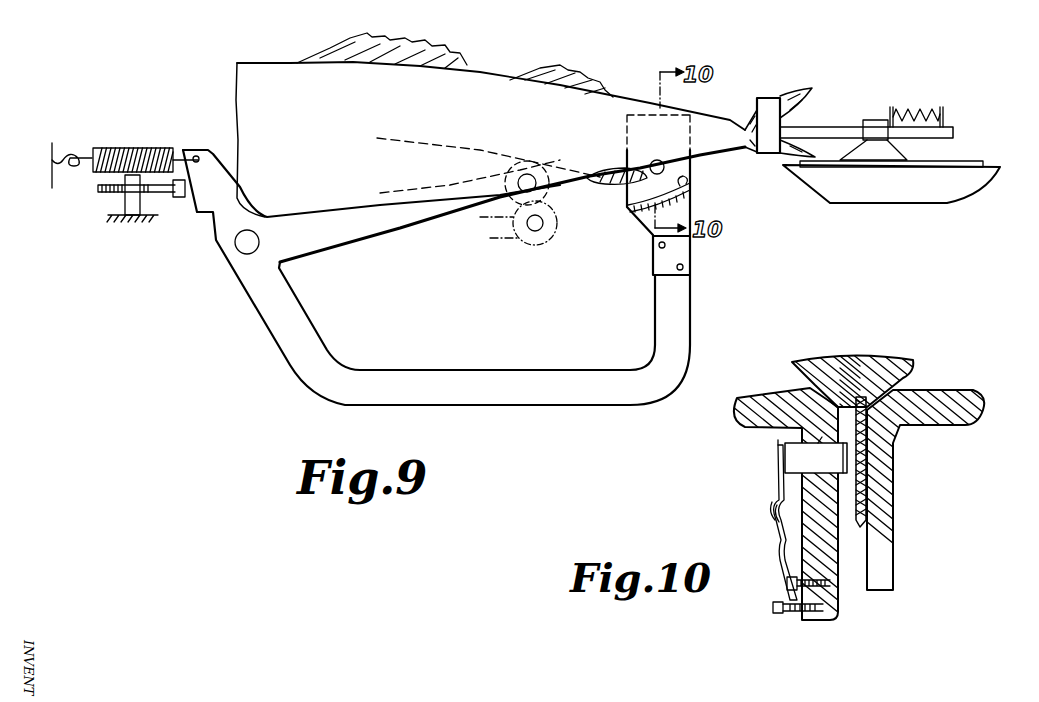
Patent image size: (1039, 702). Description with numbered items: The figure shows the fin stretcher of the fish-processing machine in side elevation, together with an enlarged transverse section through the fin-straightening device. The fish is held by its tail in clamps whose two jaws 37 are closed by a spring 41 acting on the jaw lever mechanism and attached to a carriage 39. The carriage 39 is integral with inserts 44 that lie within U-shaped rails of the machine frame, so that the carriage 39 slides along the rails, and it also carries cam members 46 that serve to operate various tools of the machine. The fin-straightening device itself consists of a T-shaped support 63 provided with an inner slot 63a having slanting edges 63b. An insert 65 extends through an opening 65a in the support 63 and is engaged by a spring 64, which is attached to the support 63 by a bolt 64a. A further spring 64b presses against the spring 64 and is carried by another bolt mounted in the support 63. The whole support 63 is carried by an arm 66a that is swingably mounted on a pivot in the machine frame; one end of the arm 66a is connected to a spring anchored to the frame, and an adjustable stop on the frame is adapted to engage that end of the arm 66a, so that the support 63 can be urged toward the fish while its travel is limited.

In FIG. 9, the jaws 37 is at (768, 98).
In FIG. 9, the carriage 39 is at (905, 152).
In FIG. 9, the spring 41 is at (905, 106).
In FIG. 9, the inserts 44 is at (983, 163).
In FIG. 9, the cam members 46 is at (907, 197).
In FIG. 9, the T-shaped support 63 is at (642, 112).
In FIG. 10, the T-shaped support 63 is at (772, 398).
In FIG. 10, the inner slot 63a is at (853, 590).
In FIG. 10, the slanting edges 63b is at (887, 360).
In FIG. 9, the spring 64 is at (692, 200).
In FIG. 10, the spring 64 is at (778, 478).
In FIG. 10, the bolt 64a is at (789, 583).
In FIG. 10, the spring 64b is at (778, 527).
In FIG. 9, the insert 65 is at (665, 168).
In FIG. 10, the insert 65 is at (783, 462).
In FIG. 10, the opening 65a is at (816, 455).
In FIG. 9, the arm 66a is at (520, 394).